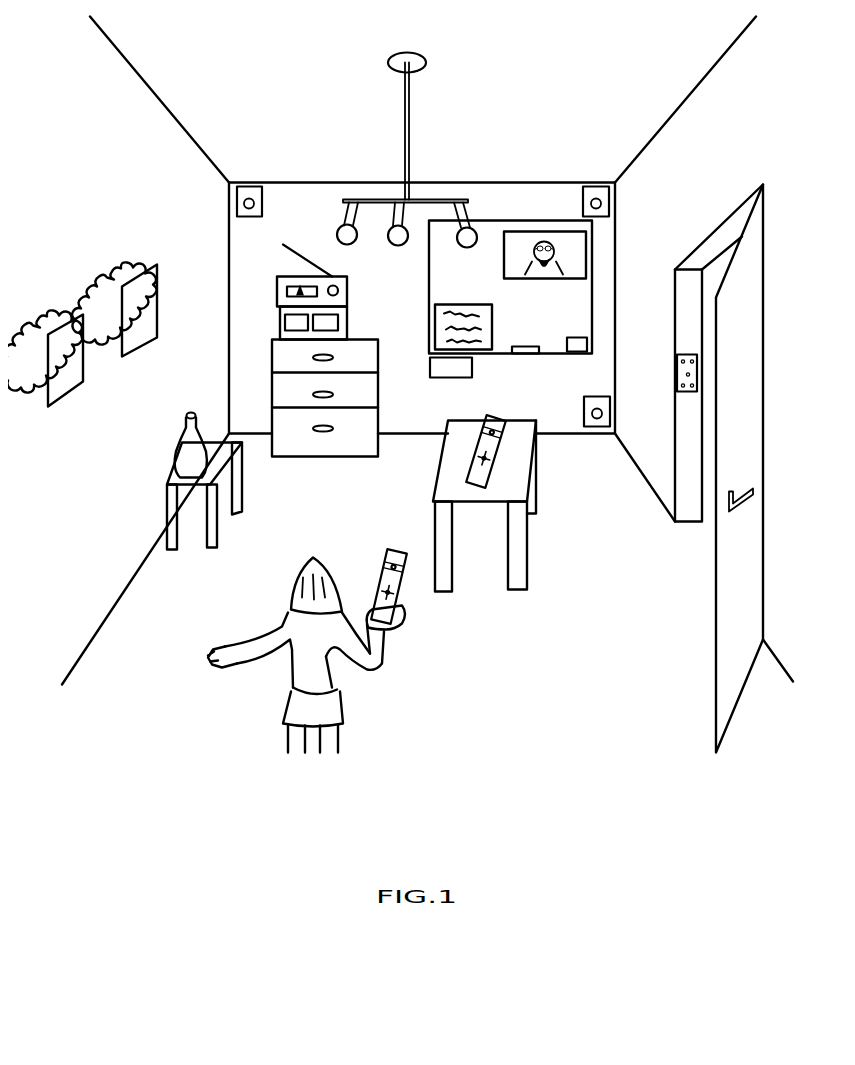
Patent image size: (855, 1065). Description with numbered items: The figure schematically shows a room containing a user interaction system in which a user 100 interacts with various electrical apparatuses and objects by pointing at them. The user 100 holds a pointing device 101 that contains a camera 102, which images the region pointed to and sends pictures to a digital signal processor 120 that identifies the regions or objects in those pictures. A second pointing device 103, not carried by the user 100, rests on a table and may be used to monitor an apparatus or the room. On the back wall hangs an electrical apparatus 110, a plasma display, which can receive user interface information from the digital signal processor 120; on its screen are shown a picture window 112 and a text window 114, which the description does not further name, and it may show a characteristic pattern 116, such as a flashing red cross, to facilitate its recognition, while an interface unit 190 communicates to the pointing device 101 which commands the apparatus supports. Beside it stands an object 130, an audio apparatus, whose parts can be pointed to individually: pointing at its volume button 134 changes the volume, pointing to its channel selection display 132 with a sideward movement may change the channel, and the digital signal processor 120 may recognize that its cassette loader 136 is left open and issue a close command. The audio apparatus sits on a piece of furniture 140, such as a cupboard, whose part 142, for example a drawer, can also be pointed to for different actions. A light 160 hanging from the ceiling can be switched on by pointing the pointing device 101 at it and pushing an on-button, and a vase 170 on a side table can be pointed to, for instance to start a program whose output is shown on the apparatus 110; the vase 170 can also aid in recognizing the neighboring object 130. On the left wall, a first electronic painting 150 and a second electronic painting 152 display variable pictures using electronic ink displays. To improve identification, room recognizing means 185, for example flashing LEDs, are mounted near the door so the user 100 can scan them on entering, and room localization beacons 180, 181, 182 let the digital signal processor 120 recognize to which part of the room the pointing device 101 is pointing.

The user 100 is at (283, 624).
The pointing device 101 is at (404, 597).
The camera 102 is at (395, 549).
The pointing device 103 is at (476, 461).
The electrical apparatus 110 is at (513, 219).
The video window 112 is at (586, 259).
The text window 114 is at (440, 329).
The characteristic pattern 116 is at (588, 347).
The digital signal processor 120 is at (432, 368).
The object 130 is at (316, 292).
The channel selection display 132 is at (292, 286).
The volume button 134 is at (339, 290).
The cassette loader 136 is at (334, 321).
The piece of furniture 140 is at (329, 398).
The part of furniture 142 is at (372, 357).
The first electronic painting 150 is at (64, 303).
The second electronic painting 152 is at (144, 258).
The light 160 is at (404, 172).
The vase 170 is at (173, 446).
The room localization beacon 180 is at (247, 187).
The room localization beacon 181 is at (589, 189).
The room localization beacon 182 is at (597, 428).
The room recognizing means 185 is at (677, 372).
The interface unit 190 is at (522, 357).